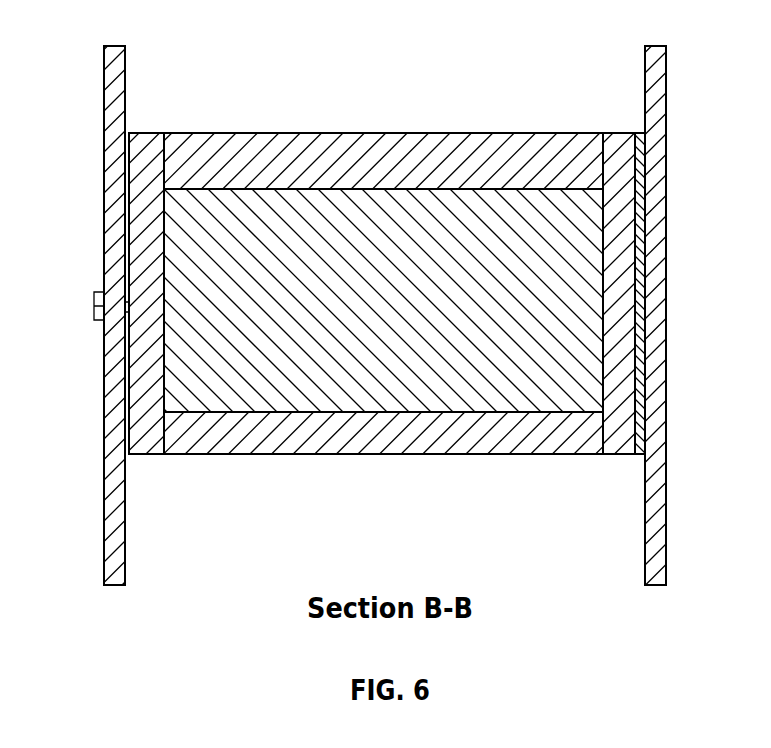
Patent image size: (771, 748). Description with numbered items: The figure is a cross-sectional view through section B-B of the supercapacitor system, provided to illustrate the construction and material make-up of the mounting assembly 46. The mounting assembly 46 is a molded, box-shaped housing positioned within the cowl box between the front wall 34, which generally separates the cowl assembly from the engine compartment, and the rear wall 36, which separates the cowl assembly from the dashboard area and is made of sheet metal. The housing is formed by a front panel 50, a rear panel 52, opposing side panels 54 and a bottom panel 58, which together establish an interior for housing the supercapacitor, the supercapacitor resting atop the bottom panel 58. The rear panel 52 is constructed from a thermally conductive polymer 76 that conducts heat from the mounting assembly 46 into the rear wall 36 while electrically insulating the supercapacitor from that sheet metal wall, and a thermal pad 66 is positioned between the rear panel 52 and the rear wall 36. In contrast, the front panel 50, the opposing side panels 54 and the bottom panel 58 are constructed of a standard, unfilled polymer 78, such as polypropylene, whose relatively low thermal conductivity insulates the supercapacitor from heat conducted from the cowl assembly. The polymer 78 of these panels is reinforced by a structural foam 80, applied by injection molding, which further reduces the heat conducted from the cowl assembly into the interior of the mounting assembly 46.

The front wall 34 is at (104, 183).
The rear wall 36 is at (652, 302).
The mounting assembly 46 is at (489, 98).
The front panel 50 is at (157, 268).
The rear panel 52 is at (617, 160).
The opposing side panels 54 is at (405, 185).
The bottom panel 58 is at (487, 380).
The thermal pad 66 is at (638, 238).
The thermally conductive polymer 76 is at (620, 197).
The polymer 78 is at (135, 397).
The structural foam 80 is at (290, 153).